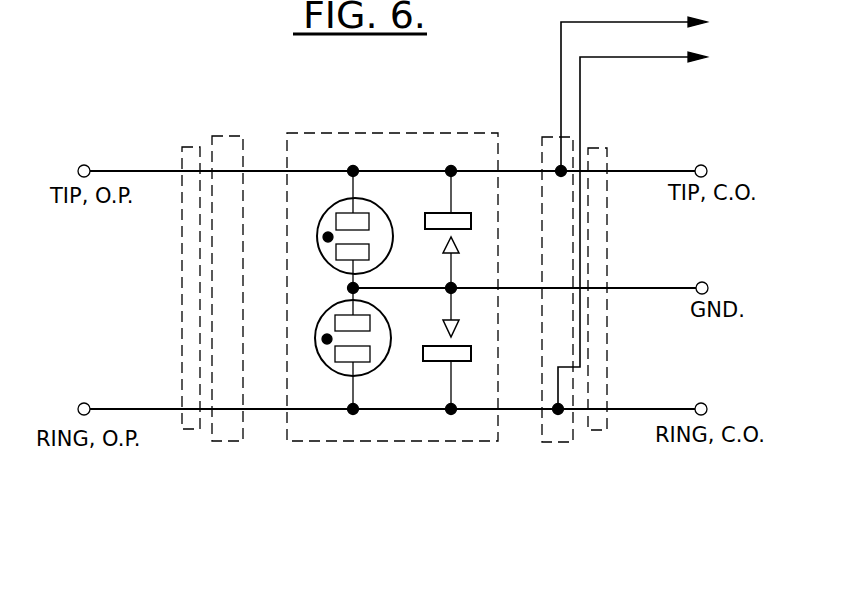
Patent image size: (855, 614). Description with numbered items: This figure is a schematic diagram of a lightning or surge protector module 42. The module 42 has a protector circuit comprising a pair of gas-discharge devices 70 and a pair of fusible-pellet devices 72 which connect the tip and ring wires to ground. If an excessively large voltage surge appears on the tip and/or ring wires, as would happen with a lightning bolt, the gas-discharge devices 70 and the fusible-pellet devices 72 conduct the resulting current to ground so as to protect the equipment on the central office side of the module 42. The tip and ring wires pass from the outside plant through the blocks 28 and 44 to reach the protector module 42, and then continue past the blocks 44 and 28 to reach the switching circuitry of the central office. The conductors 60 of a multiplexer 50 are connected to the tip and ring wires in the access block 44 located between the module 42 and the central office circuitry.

The block 28 is at (192, 146).
The access block 44 is at (226, 136).
The protector module 42 is at (383, 133).
The gas-discharge device 70 is at (388, 220).
The fusible-pellet device 72 is at (438, 235).
The conductor 60 is at (580, 68).
The multiplexer 50 is at (710, 39).